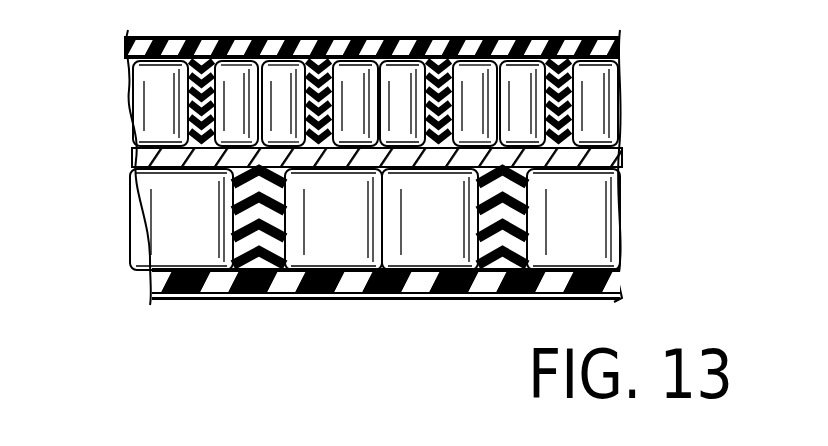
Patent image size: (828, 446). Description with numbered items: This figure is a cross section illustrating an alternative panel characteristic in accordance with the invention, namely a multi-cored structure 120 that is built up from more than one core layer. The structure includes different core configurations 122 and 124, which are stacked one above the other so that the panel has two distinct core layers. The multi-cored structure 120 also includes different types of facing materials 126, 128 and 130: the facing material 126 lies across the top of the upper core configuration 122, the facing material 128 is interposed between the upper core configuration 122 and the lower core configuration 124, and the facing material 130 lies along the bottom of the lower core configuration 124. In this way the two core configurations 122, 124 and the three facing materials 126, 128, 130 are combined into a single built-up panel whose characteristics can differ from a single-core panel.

The multi-cored structure 120 is at (378, 303).
The core configuration 122 is at (360, 85).
The core configuration 124 is at (220, 247).
The facing material 126 is at (588, 46).
The facing material 128 is at (622, 156).
The facing material 130 is at (513, 285).